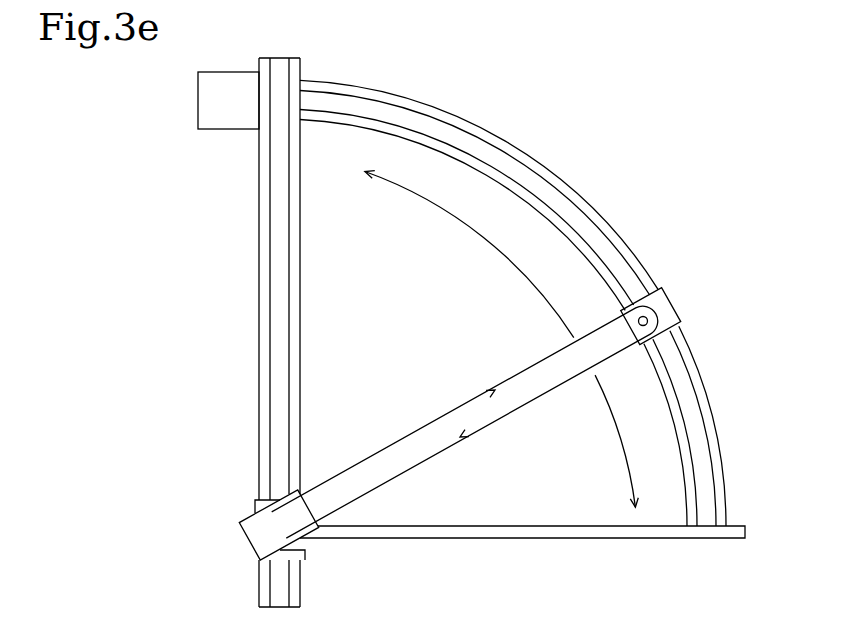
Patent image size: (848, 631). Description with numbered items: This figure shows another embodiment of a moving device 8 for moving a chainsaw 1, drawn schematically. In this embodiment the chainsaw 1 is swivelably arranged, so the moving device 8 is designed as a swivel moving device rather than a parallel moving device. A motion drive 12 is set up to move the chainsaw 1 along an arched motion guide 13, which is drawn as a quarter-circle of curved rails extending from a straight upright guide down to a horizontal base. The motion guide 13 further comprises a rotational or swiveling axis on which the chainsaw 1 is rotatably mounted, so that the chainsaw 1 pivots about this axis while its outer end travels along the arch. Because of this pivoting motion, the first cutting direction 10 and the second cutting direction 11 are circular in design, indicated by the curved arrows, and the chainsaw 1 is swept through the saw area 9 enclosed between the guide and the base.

The chainsaw 1 is at (420, 443).
The moving device 8 is at (628, 199).
The saw area 9 is at (504, 491).
The first cutting direction 10 is at (620, 445).
The second cutting direction 11 is at (473, 232).
The motion drive 12 is at (243, 114).
The motion guide 13 is at (268, 293).